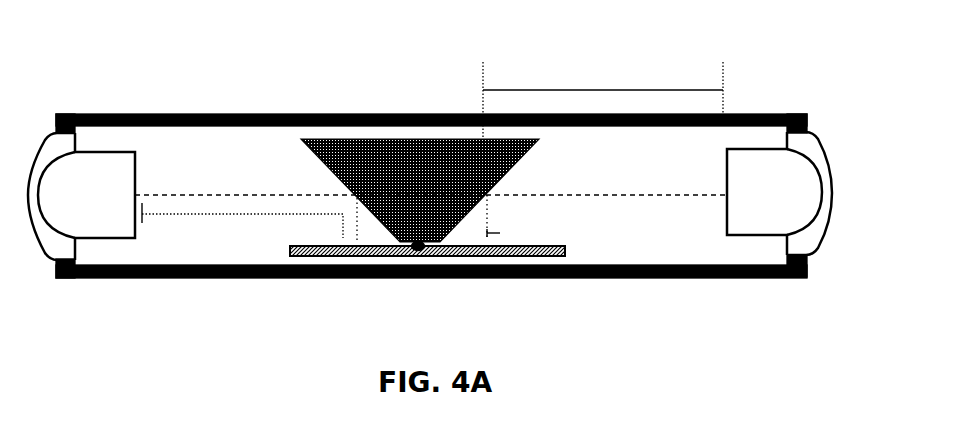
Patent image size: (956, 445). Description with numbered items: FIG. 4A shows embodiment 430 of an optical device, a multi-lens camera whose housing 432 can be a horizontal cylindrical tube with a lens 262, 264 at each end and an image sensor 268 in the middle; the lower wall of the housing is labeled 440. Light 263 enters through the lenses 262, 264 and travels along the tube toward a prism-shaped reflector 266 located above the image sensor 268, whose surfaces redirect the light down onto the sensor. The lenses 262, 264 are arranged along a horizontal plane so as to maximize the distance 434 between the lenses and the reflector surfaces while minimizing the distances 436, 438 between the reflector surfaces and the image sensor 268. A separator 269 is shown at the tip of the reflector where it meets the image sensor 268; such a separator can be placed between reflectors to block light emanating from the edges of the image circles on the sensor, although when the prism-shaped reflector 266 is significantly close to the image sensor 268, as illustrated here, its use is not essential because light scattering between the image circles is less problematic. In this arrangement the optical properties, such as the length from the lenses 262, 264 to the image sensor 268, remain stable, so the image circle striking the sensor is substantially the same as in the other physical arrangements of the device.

The embodiment 430 is at (116, 70).
The housing 432 is at (280, 114).
The bottom housing wall 440 is at (667, 279).
The lens 262 is at (81, 196).
The lens 264 is at (779, 193).
The light 263 is at (249, 194).
The prism-shaped reflector 266 is at (420, 138).
The image sensor 268 is at (388, 257).
The separator 269 is at (426, 247).
The distance 434 is at (605, 90).
The distance 436 is at (496, 233).
The distance 438 is at (253, 215).